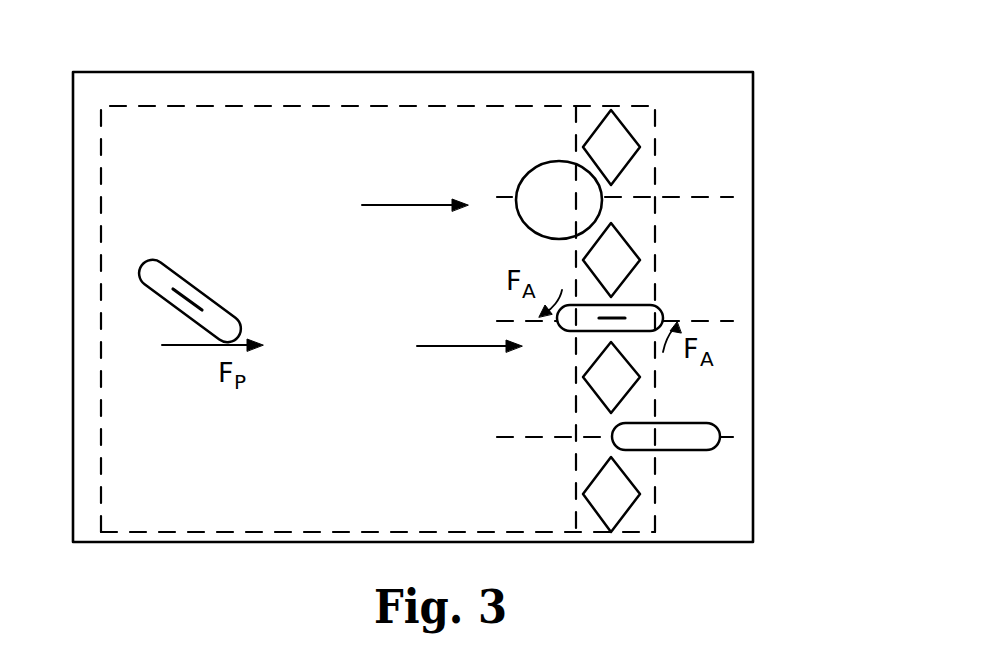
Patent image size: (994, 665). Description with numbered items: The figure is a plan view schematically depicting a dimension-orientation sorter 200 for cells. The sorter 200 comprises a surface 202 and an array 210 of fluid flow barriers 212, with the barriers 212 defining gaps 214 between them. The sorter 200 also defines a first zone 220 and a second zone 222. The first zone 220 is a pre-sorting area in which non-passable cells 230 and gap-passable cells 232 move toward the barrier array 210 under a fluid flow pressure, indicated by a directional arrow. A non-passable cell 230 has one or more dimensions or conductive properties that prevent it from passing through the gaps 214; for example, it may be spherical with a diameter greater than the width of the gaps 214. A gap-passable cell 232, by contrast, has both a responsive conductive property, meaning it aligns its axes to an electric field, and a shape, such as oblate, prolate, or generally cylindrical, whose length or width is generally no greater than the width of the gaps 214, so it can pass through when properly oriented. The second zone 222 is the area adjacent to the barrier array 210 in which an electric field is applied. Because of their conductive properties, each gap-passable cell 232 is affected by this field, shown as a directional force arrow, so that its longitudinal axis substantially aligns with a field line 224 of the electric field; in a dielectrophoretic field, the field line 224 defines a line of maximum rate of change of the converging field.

The dimension-orientation sorter 200 is at (507, 63).
The surface 202 is at (227, 90).
The first zone 220 is at (345, 105).
The array of fluid flow barriers 210 is at (627, 315).
The fluid flow barrier 212 is at (605, 118).
The gap 214 is at (611, 185).
The second zone 222 is at (654, 151).
The field line 224 is at (698, 197).
The non-passable cell 230 is at (530, 172).
The gap-passable cell 232 is at (192, 281).